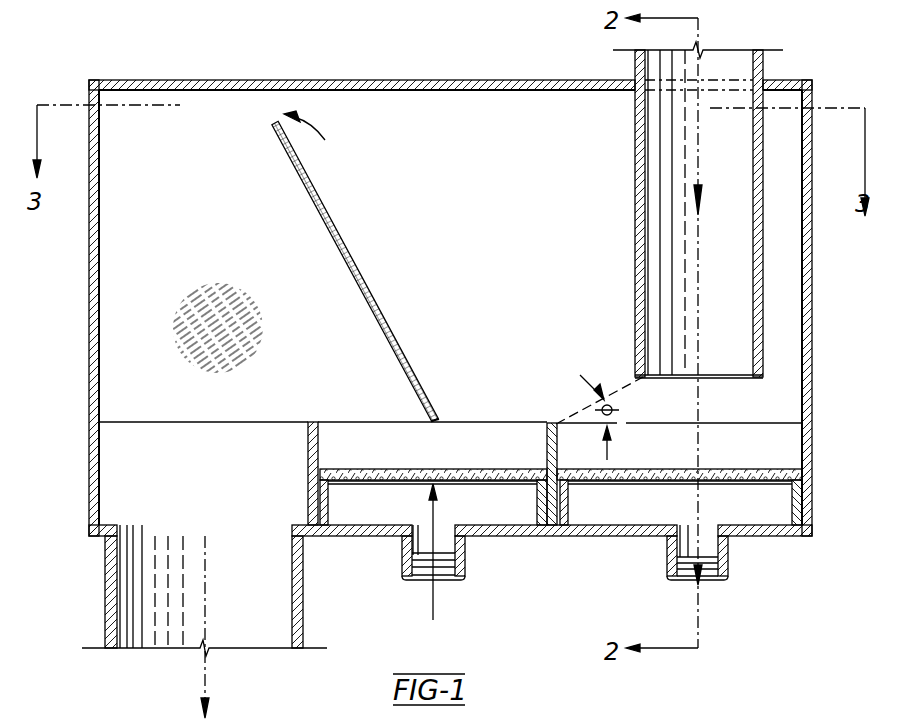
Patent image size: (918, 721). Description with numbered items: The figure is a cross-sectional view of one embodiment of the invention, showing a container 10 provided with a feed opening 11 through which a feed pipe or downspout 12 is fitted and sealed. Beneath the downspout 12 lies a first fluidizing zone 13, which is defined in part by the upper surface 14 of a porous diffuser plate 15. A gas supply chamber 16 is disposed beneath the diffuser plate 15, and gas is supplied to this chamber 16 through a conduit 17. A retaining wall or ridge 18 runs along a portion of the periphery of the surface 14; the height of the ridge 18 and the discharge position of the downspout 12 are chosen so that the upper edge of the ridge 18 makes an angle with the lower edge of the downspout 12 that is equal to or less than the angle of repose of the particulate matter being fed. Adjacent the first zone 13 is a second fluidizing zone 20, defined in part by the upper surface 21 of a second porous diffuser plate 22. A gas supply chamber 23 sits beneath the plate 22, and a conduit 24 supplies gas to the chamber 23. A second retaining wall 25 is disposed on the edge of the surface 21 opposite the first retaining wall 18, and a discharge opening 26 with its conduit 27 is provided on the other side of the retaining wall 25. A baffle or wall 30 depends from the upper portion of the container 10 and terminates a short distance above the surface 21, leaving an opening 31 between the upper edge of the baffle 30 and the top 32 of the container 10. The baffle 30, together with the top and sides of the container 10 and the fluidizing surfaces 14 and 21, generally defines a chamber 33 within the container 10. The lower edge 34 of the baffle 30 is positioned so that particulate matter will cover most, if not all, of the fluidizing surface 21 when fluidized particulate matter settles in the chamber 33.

The container 10 is at (89, 375).
The feed opening 11 is at (638, 82).
The downspout 12 is at (637, 195).
The first fluidizing zone 13 is at (668, 420).
The upper surface 14 is at (671, 474).
The porous diffuser plate 15 is at (605, 470).
The gas supply chamber 16 is at (640, 512).
The conduit 17 is at (720, 557).
The retaining wall or ridge 18 is at (553, 467).
The second fluidizing zone 20 is at (467, 443).
The upper surface 21 is at (335, 467).
The porous diffuser plate 22 is at (522, 470).
The gas supply chamber 23 is at (387, 511).
The conduit 24 is at (466, 560).
The second retaining wall 25 is at (315, 422).
The discharge opening 26 is at (226, 531).
The conduit 27 is at (303, 621).
The baffle 30 is at (333, 222).
The opening 31 is at (311, 136).
The top 32 is at (377, 92).
The chamber 33 is at (495, 276).
The lower edge 34 is at (437, 420).